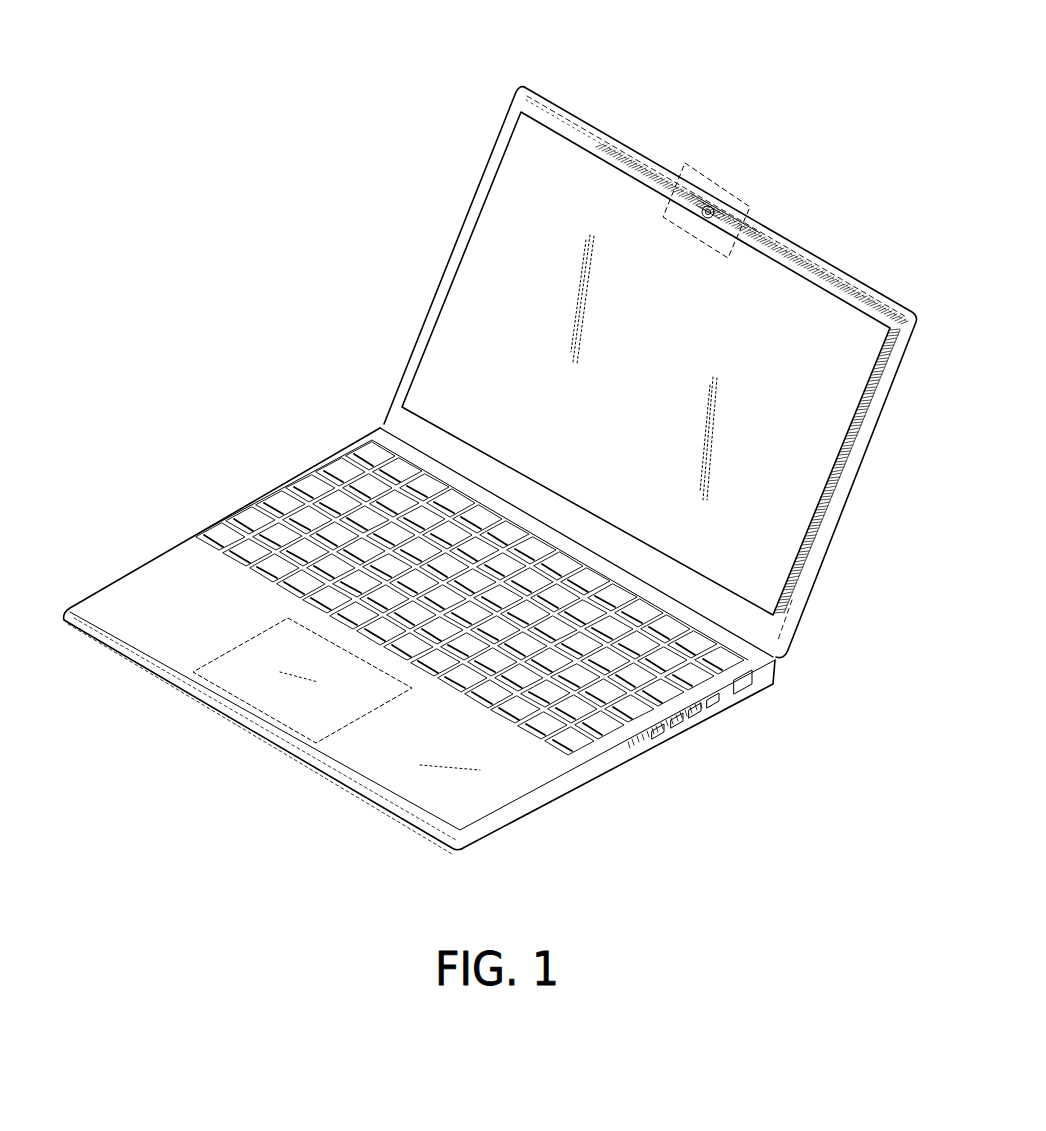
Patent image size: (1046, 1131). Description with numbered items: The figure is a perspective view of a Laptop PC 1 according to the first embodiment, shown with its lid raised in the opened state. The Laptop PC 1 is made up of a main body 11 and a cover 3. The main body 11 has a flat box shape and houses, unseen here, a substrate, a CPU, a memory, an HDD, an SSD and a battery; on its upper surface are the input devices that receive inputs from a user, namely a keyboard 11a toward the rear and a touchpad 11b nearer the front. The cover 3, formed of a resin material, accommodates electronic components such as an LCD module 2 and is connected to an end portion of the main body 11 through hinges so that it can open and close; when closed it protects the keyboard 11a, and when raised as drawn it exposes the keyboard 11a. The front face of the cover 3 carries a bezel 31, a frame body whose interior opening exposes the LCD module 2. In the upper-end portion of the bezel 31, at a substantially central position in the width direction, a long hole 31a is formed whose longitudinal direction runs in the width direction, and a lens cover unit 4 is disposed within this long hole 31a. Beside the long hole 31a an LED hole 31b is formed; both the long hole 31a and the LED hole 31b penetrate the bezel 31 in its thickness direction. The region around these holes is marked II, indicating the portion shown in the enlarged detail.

The Laptop PC 1 is at (458, 109).
The LCD module 2 is at (472, 318).
The cover 3 is at (462, 213).
The lens cover unit 4 is at (718, 207).
The main body 11 is at (152, 553).
The keyboard 11a is at (293, 518).
The touchpad 11b is at (267, 697).
The bezel 31 is at (850, 293).
The long hole 31a is at (698, 198).
The LED hole 31b is at (746, 216).
The section view indicator II is at (752, 198).